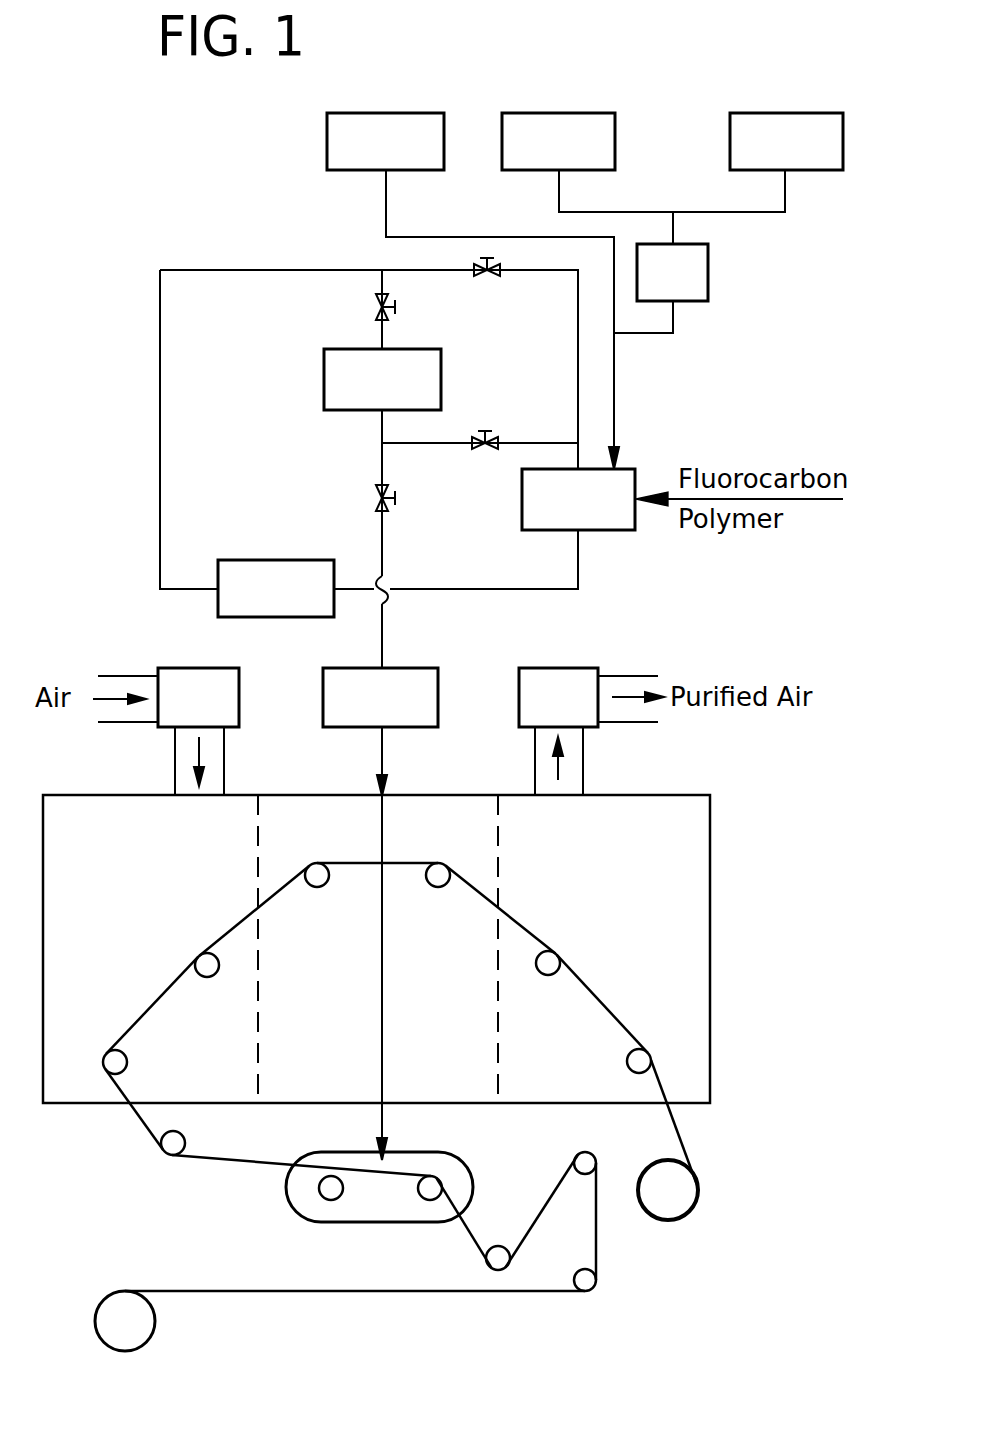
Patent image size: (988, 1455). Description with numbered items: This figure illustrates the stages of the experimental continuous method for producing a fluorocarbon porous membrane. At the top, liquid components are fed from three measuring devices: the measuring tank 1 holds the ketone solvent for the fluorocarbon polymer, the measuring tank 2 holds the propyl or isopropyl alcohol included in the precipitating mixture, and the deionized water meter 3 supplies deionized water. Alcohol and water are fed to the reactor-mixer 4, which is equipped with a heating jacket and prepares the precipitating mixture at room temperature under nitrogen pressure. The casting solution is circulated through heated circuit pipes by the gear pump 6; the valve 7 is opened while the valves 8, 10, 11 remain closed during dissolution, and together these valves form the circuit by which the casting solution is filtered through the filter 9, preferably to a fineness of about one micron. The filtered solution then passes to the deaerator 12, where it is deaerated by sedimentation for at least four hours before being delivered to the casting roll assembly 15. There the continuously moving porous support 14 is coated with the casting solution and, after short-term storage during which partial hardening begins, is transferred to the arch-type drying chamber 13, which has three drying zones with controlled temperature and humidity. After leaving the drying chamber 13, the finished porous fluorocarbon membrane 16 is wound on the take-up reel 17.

The measuring tank for the solvent 1 is at (342, 171).
The measuring tank for alcohol 2 is at (518, 171).
The deionized water meter 3 is at (810, 171).
The reactor-mixer 4 is at (709, 277).
The gear pump 6 is at (253, 559).
The valve 7 is at (488, 278).
The valve 8 is at (376, 306).
The filter 9 is at (324, 377).
The valve 10 is at (485, 452).
The valve 11 is at (372, 500).
The deaerator 12 is at (413, 667).
The drying chamber 13 is at (711, 928).
The porous support 14 is at (597, 1230).
The casting roll assembly 15 is at (286, 1200).
The finished porous fluorocarbon membrane 16 is at (676, 1130).
The take-up reel 17 is at (698, 1196).